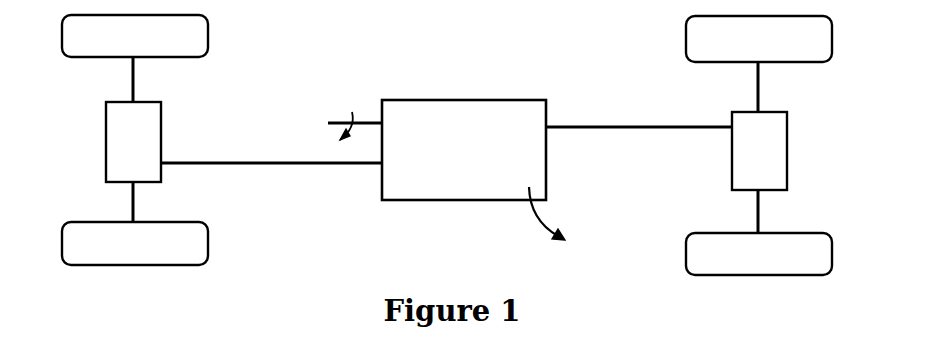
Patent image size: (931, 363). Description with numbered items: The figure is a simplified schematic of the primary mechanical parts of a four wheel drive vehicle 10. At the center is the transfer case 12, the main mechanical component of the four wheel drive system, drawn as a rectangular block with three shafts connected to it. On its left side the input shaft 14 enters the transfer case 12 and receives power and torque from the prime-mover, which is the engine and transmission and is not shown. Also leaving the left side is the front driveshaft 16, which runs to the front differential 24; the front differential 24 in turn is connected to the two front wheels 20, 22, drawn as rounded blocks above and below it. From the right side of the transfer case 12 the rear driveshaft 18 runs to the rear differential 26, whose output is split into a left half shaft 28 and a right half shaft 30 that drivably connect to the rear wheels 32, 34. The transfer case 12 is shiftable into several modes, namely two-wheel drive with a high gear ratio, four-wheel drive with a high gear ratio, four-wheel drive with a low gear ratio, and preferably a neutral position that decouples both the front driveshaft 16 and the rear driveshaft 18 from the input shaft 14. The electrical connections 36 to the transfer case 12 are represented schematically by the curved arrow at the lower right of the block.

The four wheel drive vehicle 10 is at (373, 226).
The transfer case 12 is at (464, 150).
The input shaft 14 is at (342, 120).
The front driveshaft 16 is at (273, 159).
The rear driveshaft 18 is at (639, 114).
The front wheel 20 is at (135, 243).
The front wheel 22 is at (135, 36).
The front differential 24 is at (133, 142).
The rear differential 26 is at (759, 151).
The left half shaft 28 is at (760, 207).
The right half shaft 30 is at (760, 88).
The rear wheel 32 is at (759, 254).
The rear wheel 34 is at (759, 39).
The electrical connections 36 is at (552, 223).